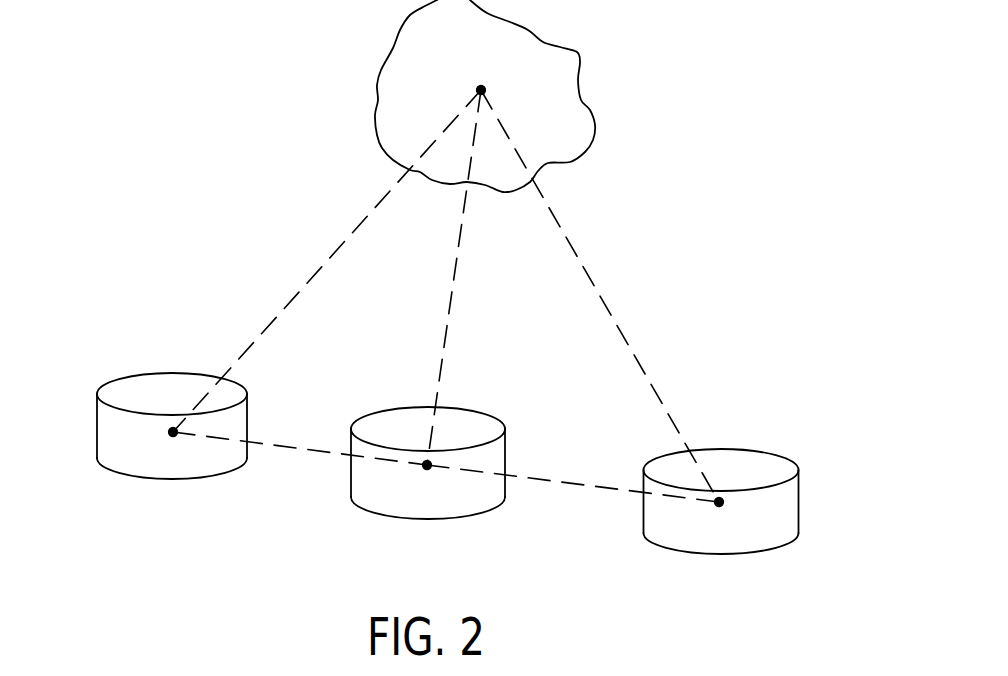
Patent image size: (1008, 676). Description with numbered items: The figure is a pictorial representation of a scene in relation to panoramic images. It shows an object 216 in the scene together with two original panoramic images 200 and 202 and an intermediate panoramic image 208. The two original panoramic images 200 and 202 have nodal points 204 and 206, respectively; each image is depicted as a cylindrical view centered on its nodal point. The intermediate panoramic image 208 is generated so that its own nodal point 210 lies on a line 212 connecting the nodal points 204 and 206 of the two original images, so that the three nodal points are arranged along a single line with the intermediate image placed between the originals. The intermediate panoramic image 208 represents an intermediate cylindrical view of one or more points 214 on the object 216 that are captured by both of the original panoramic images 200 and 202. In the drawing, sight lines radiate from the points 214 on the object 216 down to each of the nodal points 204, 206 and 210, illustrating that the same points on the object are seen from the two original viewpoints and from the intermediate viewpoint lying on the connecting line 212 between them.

The original panoramic image 200 is at (97, 420).
The original panoramic image 202 is at (799, 498).
The nodal point 204 is at (173, 432).
The nodal point 206 is at (719, 502).
The intermediate panoramic image 208 is at (505, 452).
The nodal point 210 is at (427, 465).
The line 212 is at (572, 487).
The points 214 is at (477, 85).
The object 216 is at (577, 100).